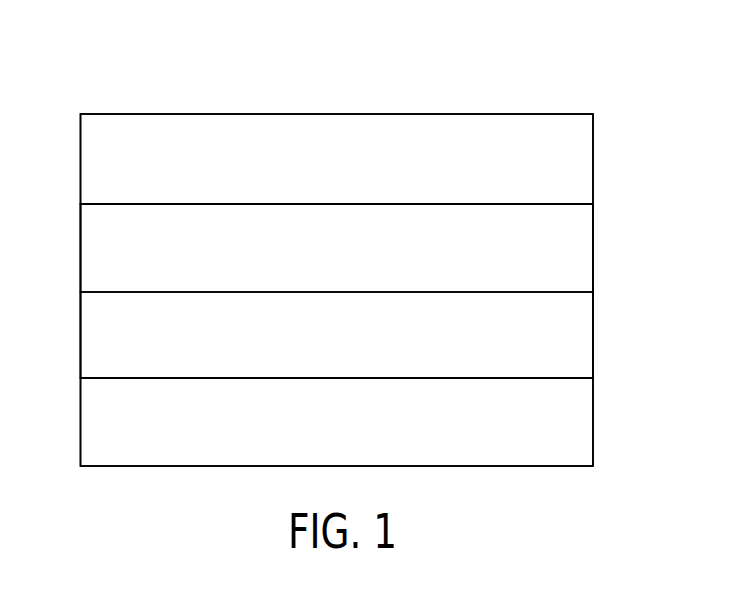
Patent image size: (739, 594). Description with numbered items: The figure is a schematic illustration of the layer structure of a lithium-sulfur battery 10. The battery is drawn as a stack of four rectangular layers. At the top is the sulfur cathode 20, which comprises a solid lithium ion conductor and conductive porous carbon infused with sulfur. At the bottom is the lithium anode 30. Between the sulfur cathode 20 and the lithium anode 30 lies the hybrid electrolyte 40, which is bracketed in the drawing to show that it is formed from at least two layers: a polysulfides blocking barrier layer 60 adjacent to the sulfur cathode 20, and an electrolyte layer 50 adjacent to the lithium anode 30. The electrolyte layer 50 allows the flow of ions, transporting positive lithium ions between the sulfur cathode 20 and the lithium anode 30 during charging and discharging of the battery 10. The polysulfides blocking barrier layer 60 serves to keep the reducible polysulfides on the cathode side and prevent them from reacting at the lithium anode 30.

The lithium-sulfur battery 10 is at (572, 97).
The sulfur cathode 20 is at (348, 180).
The polysulfides blocking barrier layer 60 is at (348, 266).
The electrolyte layer 50 is at (348, 354).
The lithium anode 30 is at (348, 442).
The hybrid electrolyte 40 is at (67, 205).